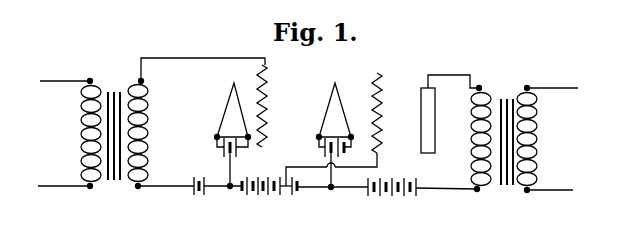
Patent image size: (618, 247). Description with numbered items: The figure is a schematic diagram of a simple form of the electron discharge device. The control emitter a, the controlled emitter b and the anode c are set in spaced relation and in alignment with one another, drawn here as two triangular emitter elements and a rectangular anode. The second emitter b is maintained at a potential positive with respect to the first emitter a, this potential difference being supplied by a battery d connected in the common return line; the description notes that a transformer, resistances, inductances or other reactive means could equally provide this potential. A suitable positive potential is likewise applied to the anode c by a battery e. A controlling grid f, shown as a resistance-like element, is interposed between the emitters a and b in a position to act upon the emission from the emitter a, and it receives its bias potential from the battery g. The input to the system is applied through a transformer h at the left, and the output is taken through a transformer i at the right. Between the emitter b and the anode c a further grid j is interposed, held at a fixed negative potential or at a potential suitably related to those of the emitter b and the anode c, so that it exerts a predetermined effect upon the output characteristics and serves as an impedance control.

The control emitter a is at (232, 108).
The controlled emitter b is at (343, 105).
The anode c is at (432, 102).
The battery d is at (267, 197).
The battery e is at (408, 200).
The controlling grid f is at (262, 125).
The battery g is at (190, 193).
The transformer h is at (148, 141).
The transformer i is at (535, 141).
The grid j is at (382, 90).